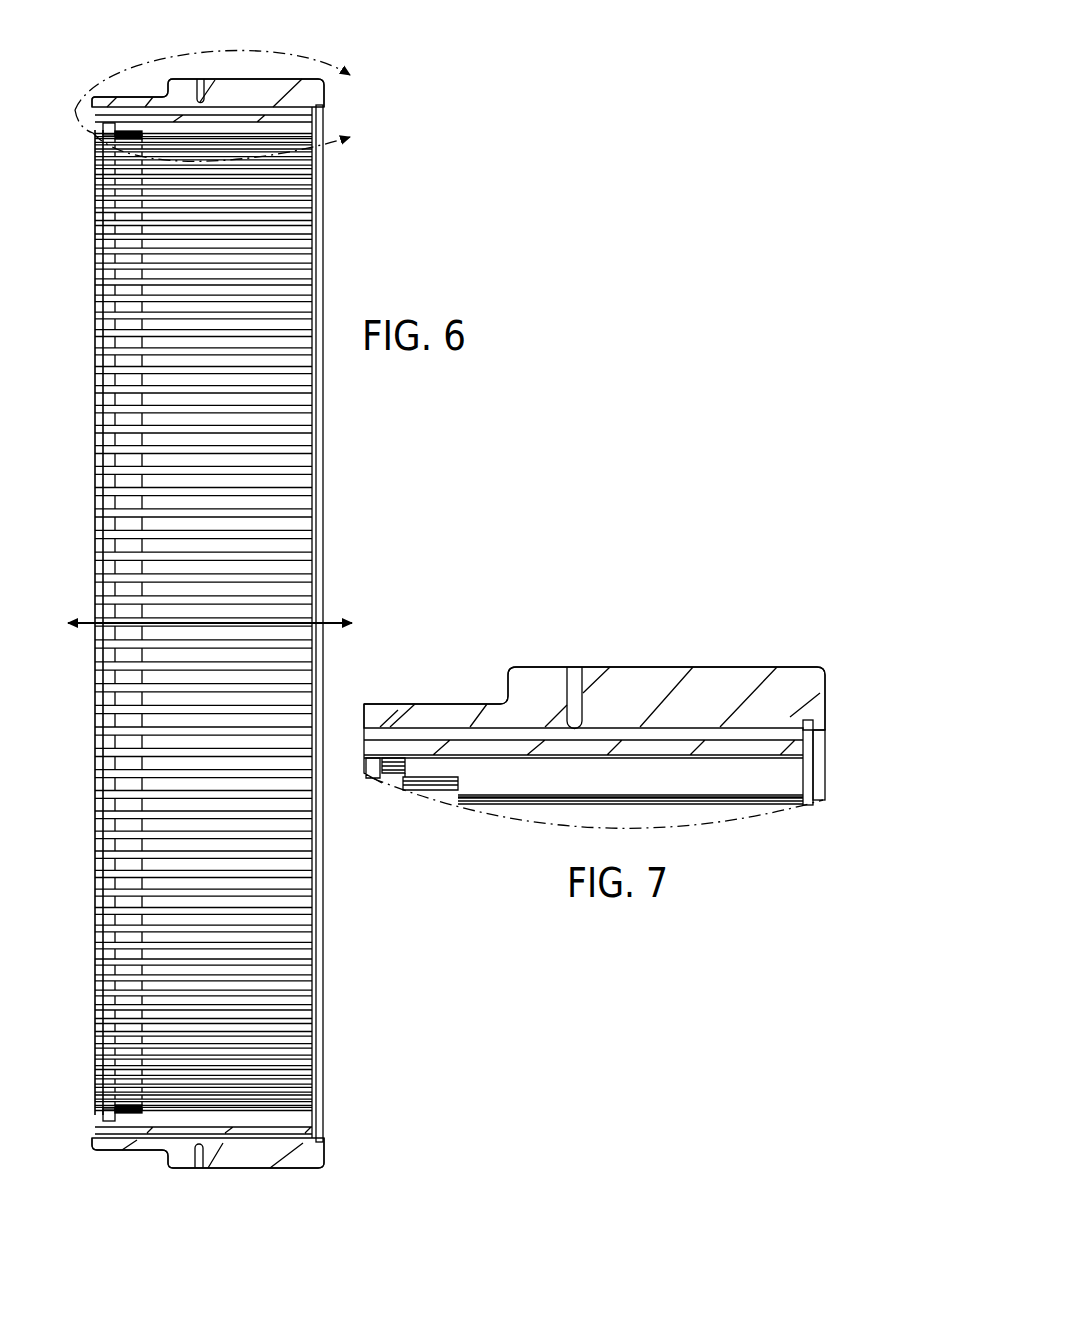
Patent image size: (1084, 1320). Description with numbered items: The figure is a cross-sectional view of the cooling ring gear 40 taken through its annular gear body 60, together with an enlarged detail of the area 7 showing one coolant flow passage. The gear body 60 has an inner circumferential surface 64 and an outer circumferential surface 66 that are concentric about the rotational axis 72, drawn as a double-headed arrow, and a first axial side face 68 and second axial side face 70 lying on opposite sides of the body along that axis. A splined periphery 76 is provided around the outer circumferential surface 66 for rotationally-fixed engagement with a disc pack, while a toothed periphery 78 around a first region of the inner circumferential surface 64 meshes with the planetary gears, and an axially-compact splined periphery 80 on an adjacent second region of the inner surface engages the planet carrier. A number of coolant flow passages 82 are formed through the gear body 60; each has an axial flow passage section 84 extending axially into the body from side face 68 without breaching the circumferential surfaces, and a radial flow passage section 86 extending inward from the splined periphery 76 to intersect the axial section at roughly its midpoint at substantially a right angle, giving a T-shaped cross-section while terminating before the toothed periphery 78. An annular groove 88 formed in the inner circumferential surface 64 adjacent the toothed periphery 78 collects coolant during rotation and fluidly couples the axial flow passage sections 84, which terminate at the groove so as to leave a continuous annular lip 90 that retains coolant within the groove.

In FIG. 6, the detail area 7 is at (222, 105).
In FIG. 6, the cooling ring gear 40 is at (68, 135).
In FIG. 7, the cooling ring gear 40 is at (768, 595).
In FIG. 6, the annular gear body 60 is at (273, 88).
In FIG. 7, the annular gear body 60 is at (720, 699).
In FIG. 6, the inner circumferential surface 64 is at (193, 700).
In FIG. 7, the inner circumferential surface 64 is at (527, 808).
In FIG. 6, the outer circumferential surface 66 is at (263, 78).
In FIG. 7, the outer circumferential surface 66 is at (700, 665).
In FIG. 6, the first axial side face 68 is at (325, 95).
In FIG. 7, the first axial side face 68 is at (825, 695).
In FIG. 6, the second axial side face 70 is at (93, 100).
In FIG. 7, the second axial side face 70 is at (363, 745).
In FIG. 6, the rotational axis 72 is at (213, 622).
In FIG. 6, the splined periphery 76 is at (170, 83).
In FIG. 7, the splined periphery 76 is at (540, 675).
In FIG. 6, the toothed periphery 78 is at (307, 503).
In FIG. 7, the toothed periphery 78 is at (747, 812).
In FIG. 6, the axially-compact splined periphery 80 is at (100, 532).
In FIG. 6, the coolant flow passage 82 is at (247, 113).
In FIG. 7, the coolant flow passage 82 is at (652, 737).
In FIG. 6, the axial flow passage section 84 is at (132, 108).
In FIG. 7, the axial flow passage section 84 is at (440, 728).
In FIG. 6, the radial flow passage section 86 is at (200, 85).
In FIG. 7, the radial flow passage section 86 is at (577, 673).
In FIG. 6, the annular groove 88 is at (317, 227).
In FIG. 7, the annular groove 88 is at (810, 782).
In FIG. 7, the continuous annular lip 90 is at (820, 727).